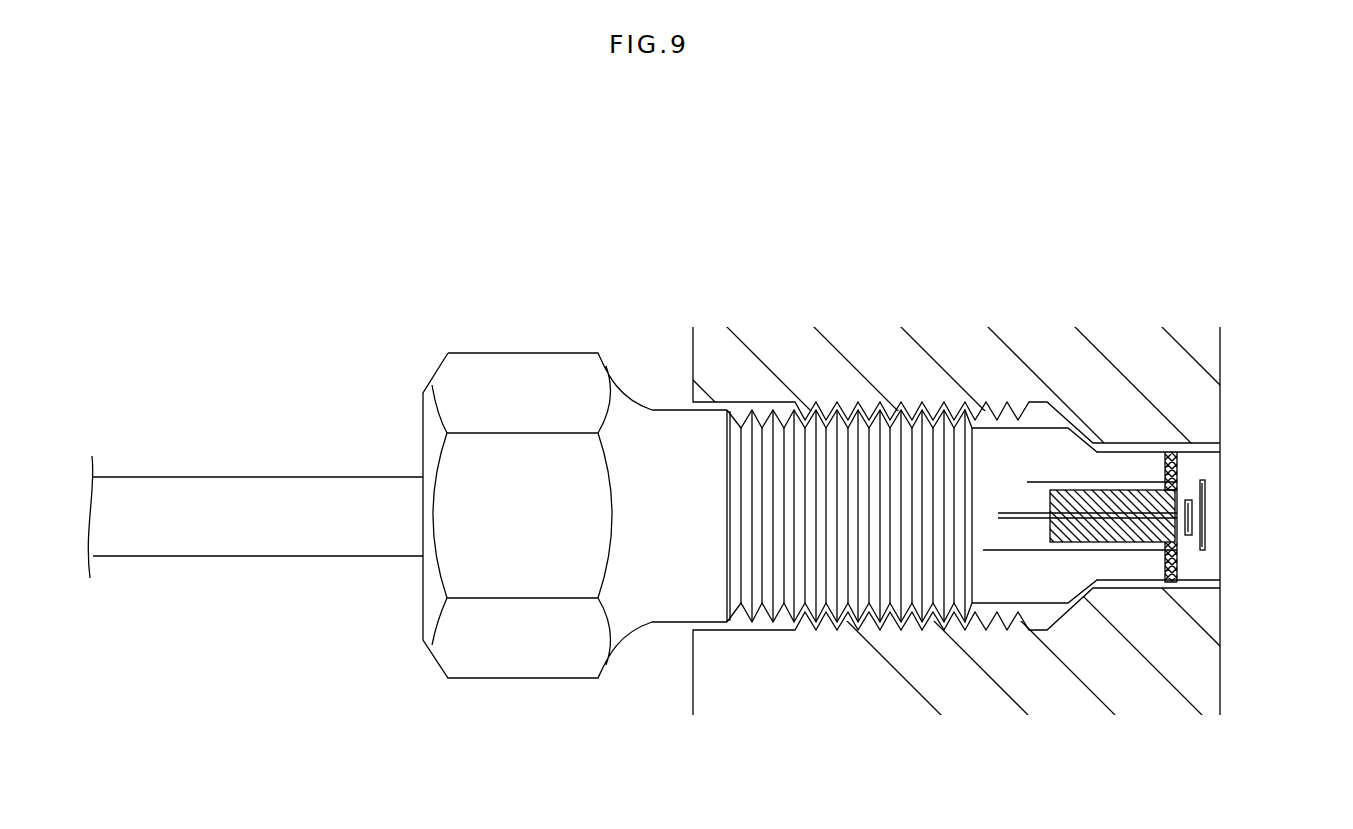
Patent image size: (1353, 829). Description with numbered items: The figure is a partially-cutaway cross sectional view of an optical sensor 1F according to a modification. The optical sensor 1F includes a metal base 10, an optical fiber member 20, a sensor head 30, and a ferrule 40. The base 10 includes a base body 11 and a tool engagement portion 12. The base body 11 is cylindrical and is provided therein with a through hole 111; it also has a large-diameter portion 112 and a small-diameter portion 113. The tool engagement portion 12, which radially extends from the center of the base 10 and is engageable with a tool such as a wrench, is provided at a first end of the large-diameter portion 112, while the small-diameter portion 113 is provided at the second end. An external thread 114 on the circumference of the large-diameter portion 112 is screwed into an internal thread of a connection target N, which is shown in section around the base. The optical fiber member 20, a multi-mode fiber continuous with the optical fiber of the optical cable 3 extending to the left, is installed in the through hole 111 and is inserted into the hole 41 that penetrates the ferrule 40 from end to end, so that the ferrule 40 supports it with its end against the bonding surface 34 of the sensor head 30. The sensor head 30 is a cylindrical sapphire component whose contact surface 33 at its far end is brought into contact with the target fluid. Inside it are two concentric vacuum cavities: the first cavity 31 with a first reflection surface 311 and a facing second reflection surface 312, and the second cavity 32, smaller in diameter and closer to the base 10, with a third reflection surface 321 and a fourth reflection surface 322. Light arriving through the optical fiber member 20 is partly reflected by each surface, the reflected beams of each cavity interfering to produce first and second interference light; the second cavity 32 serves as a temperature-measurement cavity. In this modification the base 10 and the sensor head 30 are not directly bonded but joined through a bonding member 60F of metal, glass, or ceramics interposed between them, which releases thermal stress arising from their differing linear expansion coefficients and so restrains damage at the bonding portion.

The optical sensor 1F is at (1098, 145).
The optical cable 3 is at (352, 477).
The base 10 is at (973, 454).
The base body 11 is at (826, 402).
The tool engagement portion 12 is at (548, 352).
The optical fiber member 20 is at (1018, 518).
The sensor head 30 is at (1163, 530).
The first cavity 31 is at (1271, 516).
The second cavity 32 is at (1264, 555).
The contact surface 33 is at (1207, 515).
The bonding surface 34 is at (1170, 441).
The ferrule 40 is at (1060, 550).
The hole 41 is at (1172, 560).
The bonding member 60F is at (1203, 548).
The through hole 111 is at (1062, 490).
The large-diameter portion 112 is at (978, 603).
The small-diameter portion 113 is at (1117, 590).
The external thread 114 is at (853, 630).
The first reflection surface 311 is at (1210, 523).
The second reflection surface 312 is at (1207, 548).
The third reflection surface 321 is at (1195, 500).
The fourth reflection surface 322 is at (1195, 532).
The connection target N is at (1195, 375).